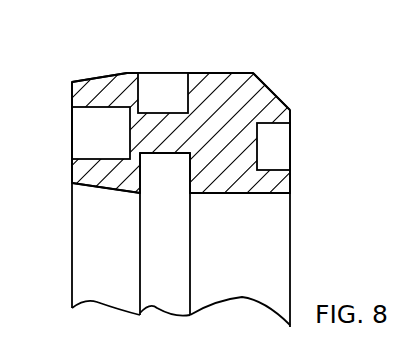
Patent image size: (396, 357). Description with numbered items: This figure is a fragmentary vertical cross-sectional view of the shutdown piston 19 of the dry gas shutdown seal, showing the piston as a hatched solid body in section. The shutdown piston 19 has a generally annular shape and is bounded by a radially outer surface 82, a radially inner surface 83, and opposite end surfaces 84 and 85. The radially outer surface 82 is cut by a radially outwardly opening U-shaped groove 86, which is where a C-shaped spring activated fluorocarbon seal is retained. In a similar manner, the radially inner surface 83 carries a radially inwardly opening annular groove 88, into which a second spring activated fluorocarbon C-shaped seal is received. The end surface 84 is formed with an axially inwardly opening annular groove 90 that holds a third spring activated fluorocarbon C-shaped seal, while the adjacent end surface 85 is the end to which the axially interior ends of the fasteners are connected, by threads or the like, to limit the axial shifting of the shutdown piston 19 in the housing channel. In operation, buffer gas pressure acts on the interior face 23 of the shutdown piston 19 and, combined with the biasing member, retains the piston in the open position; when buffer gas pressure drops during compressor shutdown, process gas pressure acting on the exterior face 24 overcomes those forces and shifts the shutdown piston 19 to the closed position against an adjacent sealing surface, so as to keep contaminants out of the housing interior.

The shutdown piston 19 is at (252, 73).
The radially outer surface 82 is at (127, 70).
The end surface 85 is at (68, 97).
The U-shaped groove 86 is at (186, 93).
The end surface 84 is at (292, 115).
The annular groove 90 is at (273, 148).
The interior face 23 is at (292, 183).
The radially inner surface 83 is at (212, 197).
The annular groove 88 is at (161, 153).
The exterior face 24 is at (70, 168).